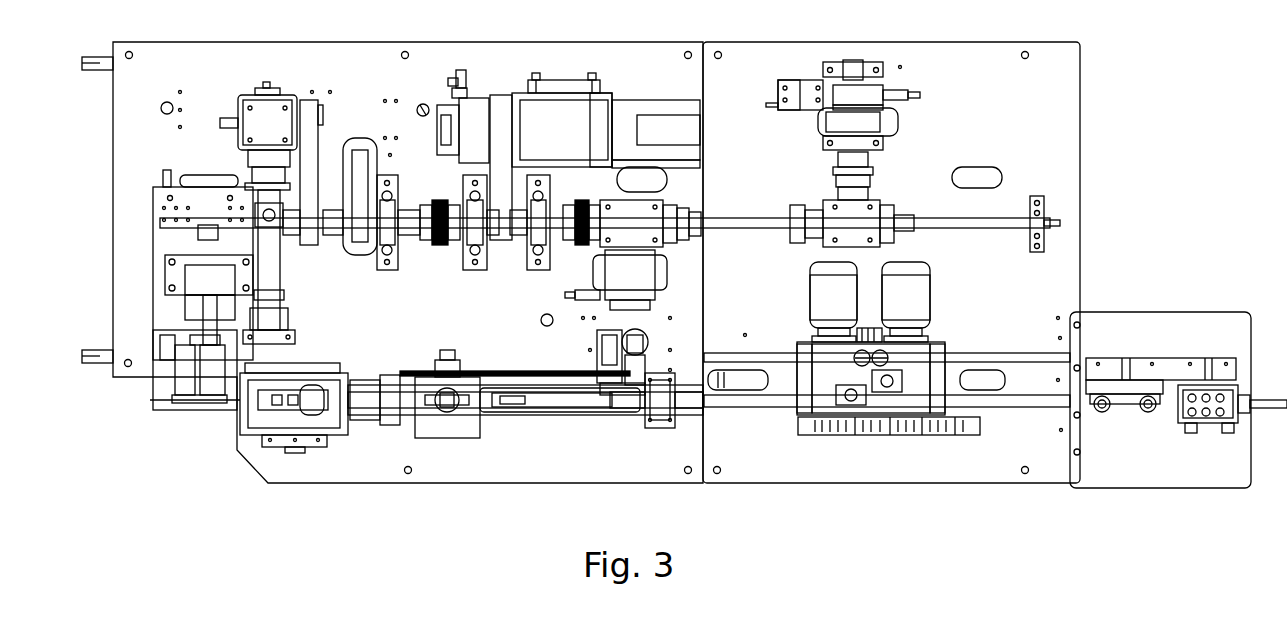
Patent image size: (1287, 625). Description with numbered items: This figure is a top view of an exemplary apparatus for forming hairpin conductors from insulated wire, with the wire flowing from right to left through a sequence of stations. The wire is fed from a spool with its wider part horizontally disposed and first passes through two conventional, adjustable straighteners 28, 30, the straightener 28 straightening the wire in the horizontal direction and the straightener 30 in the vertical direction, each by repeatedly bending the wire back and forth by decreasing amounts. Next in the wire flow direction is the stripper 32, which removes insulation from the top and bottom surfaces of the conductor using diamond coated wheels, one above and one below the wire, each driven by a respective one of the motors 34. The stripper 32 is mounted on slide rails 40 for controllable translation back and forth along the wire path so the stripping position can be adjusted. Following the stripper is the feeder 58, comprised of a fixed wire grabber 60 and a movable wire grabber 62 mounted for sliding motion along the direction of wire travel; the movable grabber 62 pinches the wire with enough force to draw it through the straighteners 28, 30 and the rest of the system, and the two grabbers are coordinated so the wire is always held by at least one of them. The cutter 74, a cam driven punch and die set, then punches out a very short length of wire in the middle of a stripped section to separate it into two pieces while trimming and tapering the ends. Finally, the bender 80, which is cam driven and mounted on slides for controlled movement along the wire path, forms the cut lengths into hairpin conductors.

The straightener 28 is at (1210, 423).
The straightener 30 is at (1123, 410).
The stripper 32 is at (866, 470).
The motors 34 is at (808, 290).
The slide rails 40 is at (968, 355).
The feeder 58 is at (504, 470).
The fixed wire grabber 60 is at (658, 430).
The movable wire grabber 62 is at (437, 432).
The cutter 74 is at (248, 475).
The bender 80 is at (180, 427).